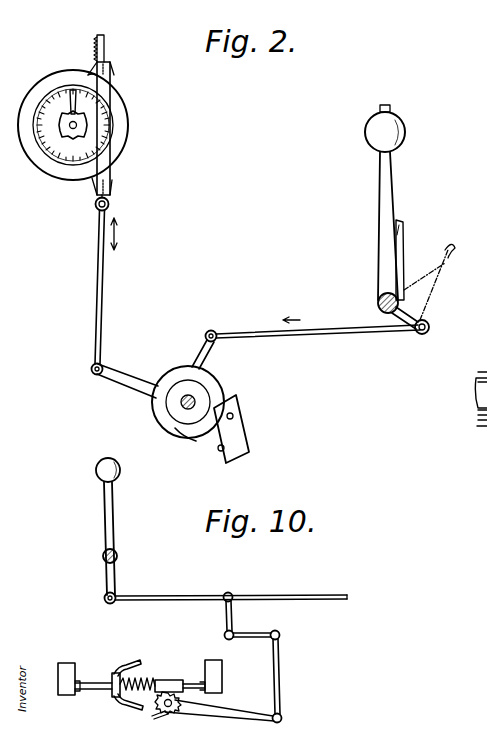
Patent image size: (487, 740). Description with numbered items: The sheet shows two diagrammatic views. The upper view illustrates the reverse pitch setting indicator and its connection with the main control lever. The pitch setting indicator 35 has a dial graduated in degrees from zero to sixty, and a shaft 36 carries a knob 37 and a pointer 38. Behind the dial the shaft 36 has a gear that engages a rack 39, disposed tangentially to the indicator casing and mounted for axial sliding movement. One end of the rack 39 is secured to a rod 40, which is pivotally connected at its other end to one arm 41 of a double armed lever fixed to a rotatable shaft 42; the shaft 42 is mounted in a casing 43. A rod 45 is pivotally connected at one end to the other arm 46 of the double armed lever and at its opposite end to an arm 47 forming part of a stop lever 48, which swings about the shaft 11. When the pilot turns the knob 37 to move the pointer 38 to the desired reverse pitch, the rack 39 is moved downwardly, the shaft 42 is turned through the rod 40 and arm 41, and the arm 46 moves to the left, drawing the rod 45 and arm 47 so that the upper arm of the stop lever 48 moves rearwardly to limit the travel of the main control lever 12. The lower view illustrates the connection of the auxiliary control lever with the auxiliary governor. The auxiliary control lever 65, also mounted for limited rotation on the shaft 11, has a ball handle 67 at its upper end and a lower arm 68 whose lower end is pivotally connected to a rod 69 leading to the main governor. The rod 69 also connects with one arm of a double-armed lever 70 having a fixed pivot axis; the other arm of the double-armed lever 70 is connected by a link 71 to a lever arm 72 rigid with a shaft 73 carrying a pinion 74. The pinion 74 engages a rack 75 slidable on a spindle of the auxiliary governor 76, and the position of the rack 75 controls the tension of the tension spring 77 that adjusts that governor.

In FIG. 2, the pointer 38 is at (48, 83).
In FIG. 2, the pitch setting indicator 35 is at (58, 167).
In FIG. 2, the rack 39 is at (108, 45).
In FIG. 2, the shaft 36 is at (88, 122).
In FIG. 2, the knob 37 is at (88, 127).
In FIG. 2, the rod 40 is at (101, 296).
In FIG. 2, the arm 41 is at (150, 362).
In FIG. 2, the arm 46 is at (222, 347).
In FIG. 2, the shaft 42 is at (198, 399).
In FIG. 2, the casing 43 is at (205, 440).
In FIG. 2, the rod 45 is at (248, 440).
In FIG. 2, the main control lever 12 is at (395, 187).
In FIG. 2, the stop lever 48 is at (400, 258).
In FIG. 2, the shaft 11 is at (378, 300).
In FIG. 2, the arm 47 is at (428, 322).
In FIG. 10, the ball handle 67 is at (121, 471).
In FIG. 10, the auxiliary control lever 65 is at (112, 507).
In FIG. 10, the lower arm 68 is at (105, 581).
In FIG. 10, the rod 69 is at (168, 596).
In FIG. 10, the double-armed lever 70 is at (226, 618).
In FIG. 10, the link 71 is at (280, 670).
In FIG. 10, the lever arm 72 is at (238, 710).
In FIG. 10, the rack 75 is at (172, 684).
In FIG. 10, the tension spring 77 is at (150, 672).
In FIG. 10, the auxiliary governor 76 is at (120, 712).
In FIG. 10, the shaft 73 is at (163, 709).
In FIG. 10, the pinion 74 is at (180, 706).